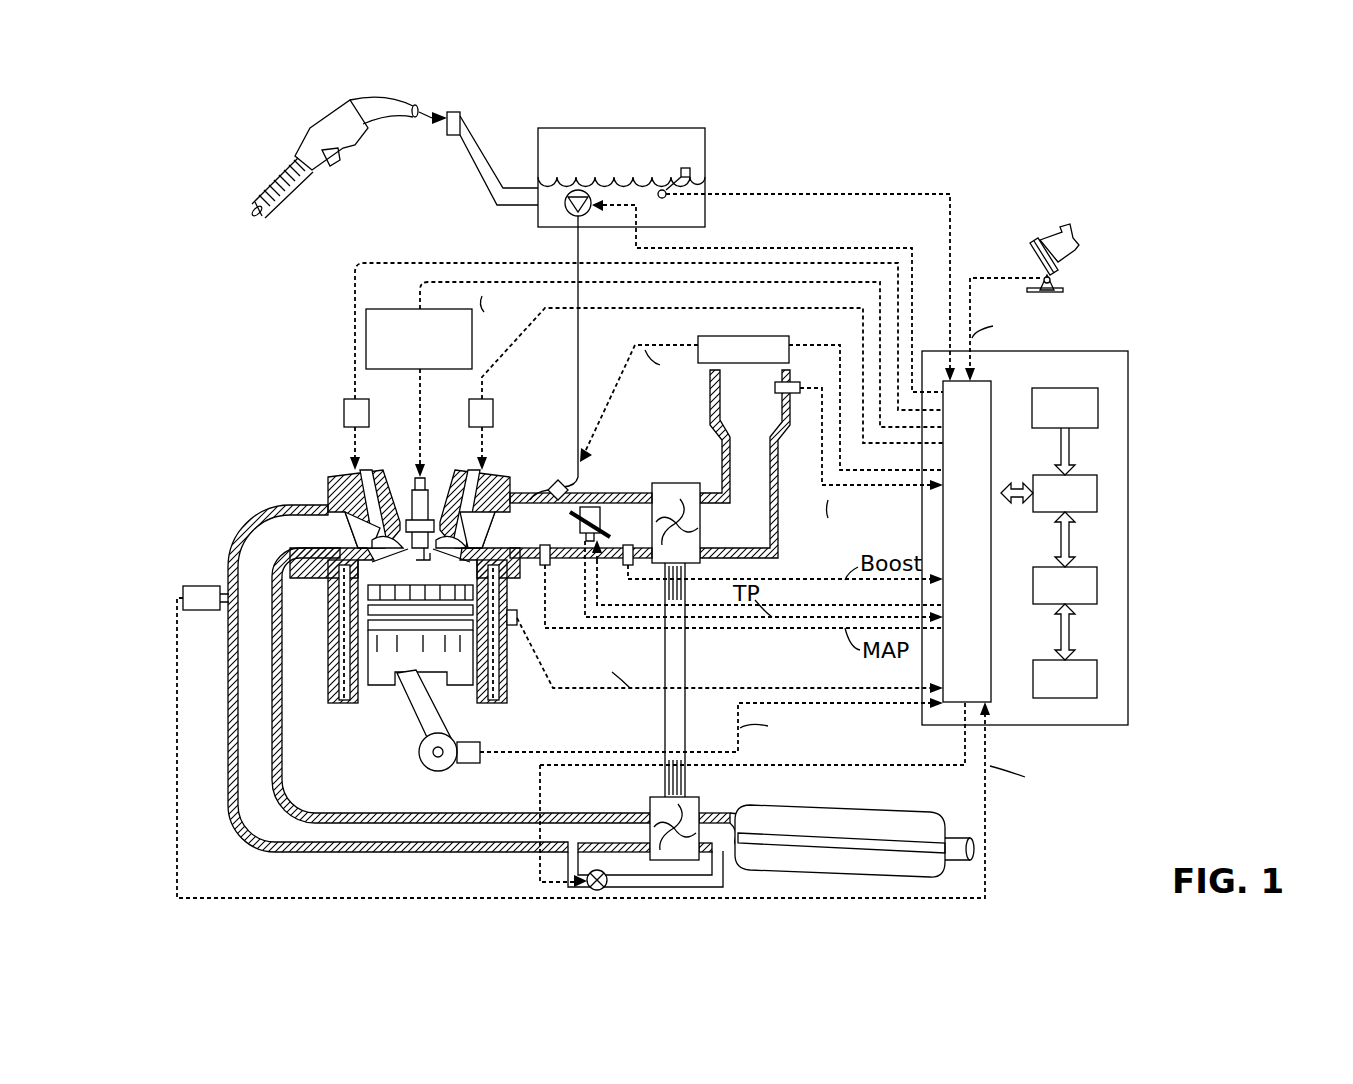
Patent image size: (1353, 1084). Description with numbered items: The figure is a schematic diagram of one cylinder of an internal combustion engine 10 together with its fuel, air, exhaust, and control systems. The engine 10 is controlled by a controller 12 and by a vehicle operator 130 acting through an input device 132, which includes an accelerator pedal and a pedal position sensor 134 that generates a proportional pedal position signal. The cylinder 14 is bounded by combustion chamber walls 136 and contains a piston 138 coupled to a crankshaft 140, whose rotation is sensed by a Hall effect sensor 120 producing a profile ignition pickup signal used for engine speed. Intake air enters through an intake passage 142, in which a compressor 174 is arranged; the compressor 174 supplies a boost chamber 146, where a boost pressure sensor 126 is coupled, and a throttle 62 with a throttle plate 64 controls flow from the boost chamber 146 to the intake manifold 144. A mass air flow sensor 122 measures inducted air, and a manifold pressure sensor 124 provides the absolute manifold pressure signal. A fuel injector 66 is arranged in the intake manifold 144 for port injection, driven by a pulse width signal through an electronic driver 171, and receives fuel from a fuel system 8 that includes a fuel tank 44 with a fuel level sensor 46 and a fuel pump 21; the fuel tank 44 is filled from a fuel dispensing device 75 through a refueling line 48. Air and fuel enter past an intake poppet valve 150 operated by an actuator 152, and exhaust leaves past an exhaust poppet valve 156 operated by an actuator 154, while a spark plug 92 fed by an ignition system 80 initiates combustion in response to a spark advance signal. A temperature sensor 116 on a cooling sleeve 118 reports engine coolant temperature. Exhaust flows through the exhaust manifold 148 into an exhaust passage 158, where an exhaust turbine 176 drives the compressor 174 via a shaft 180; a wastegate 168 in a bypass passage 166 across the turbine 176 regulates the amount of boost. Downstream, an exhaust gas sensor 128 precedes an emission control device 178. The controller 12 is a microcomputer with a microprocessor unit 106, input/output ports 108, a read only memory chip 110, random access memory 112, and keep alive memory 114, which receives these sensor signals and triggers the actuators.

The fuel dispensing device 75 is at (313, 125).
The throttle / fuel door 62 is at (462, 115).
The refueling line 48 is at (487, 150).
The fuel tank 44 is at (705, 128).
The fuel level sensor 46 is at (663, 198).
The fuel pump 21 is at (570, 210).
The fuel system 8 is at (478, 202).
The ignition system 80 is at (380, 309).
The actuator 154 is at (344, 410).
The actuator 152 is at (469, 410).
The electronic driver 171 is at (700, 337).
The mass air flow sensor 122 is at (793, 382).
The input device 132 is at (1030, 250).
The vehicle operator 130 is at (1080, 245).
The pedal position sensor 134 is at (1060, 278).
The input/output ports 108 is at (991, 392).
The controller 12 is at (1128, 352).
The read only memory chip 110 is at (1098, 400).
The microprocessor unit 106 is at (1097, 490).
The random access memory 112 is at (1097, 585).
The keep alive memory 114 is at (1097, 678).
The internal combustion engine 10 is at (270, 438).
The exhaust poppet valve 156 is at (363, 530).
The spark plug 92 is at (412, 513).
The intake poppet valve 150 is at (450, 505).
The fuel injector 66 is at (556, 482).
The throttle plate 64 is at (582, 510).
The compressor 174 is at (670, 483).
The intake manifold 144 is at (576, 525).
The boost chamber 146 is at (639, 527).
The intake passage 142 is at (745, 464).
The cylinder 14 is at (395, 578).
The exhaust gas sensor 128 is at (180, 590).
The manifold pressure sensor 124 is at (550, 567).
The boost pressure sensor 126 is at (625, 567).
The temperature sensor 116 is at (515, 625).
The cooling sleeve 118 is at (495, 665).
The combustion chamber walls 136 is at (355, 692).
The piston 138 is at (405, 680).
The crankshaft 140 is at (425, 768).
The Hall effect sensor 120 is at (470, 765).
The shaft 180 is at (688, 656).
The exhaust turbine 176 is at (700, 800).
The emission control device 178 is at (900, 808).
The exhaust passage 158 is at (380, 853).
The bypass passage 166 is at (725, 870).
The wastegate 168 is at (600, 872).
The exhaust manifold 148 is at (439, 678).